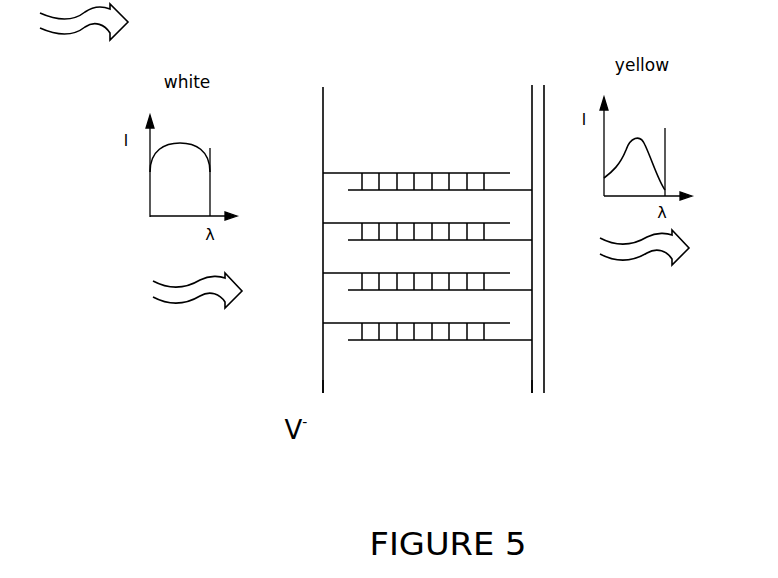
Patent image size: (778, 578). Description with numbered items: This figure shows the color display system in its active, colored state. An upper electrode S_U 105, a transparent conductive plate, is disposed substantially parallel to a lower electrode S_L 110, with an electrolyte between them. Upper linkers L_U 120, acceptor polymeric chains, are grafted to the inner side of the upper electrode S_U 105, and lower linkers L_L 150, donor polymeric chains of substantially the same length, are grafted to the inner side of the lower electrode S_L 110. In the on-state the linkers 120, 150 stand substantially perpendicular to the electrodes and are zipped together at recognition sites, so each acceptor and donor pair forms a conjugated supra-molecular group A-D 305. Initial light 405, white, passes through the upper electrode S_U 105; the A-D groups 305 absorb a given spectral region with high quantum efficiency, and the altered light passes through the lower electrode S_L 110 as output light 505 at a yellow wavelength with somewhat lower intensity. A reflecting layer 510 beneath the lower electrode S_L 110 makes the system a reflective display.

The upper electrode S_U 105 is at (323, 393).
The lower electrode S_L 110 is at (532, 393).
The upper linkers L_U 120 is at (317, 173).
The lower linkers L_L 150 is at (535, 190).
The conjugated supra-molecular group A-D 305 is at (362, 166).
The initial light 405 is at (190, 318).
The output light 505 is at (643, 265).
The reflecting layer 510 is at (548, 345).